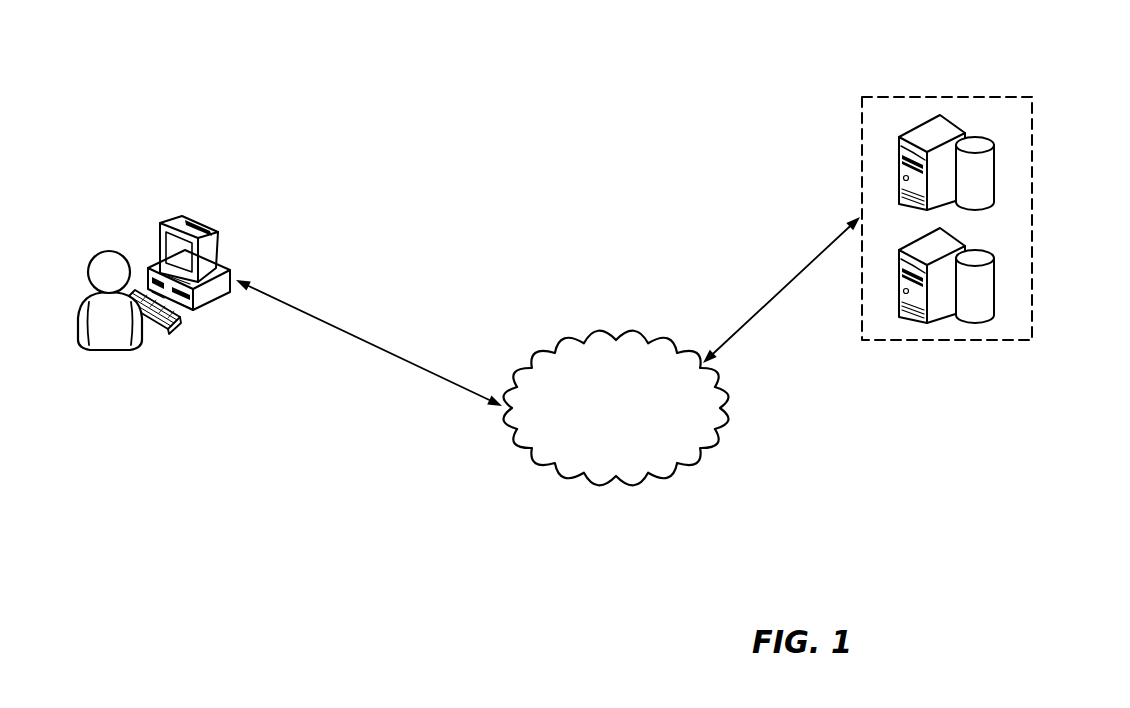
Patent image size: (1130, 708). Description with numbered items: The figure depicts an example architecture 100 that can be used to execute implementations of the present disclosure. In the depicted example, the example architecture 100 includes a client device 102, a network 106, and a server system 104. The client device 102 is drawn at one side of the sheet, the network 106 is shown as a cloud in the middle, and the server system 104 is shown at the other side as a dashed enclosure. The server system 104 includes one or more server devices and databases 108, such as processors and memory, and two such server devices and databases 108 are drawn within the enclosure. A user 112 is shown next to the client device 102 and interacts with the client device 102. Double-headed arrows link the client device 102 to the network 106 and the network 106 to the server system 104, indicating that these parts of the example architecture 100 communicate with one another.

The example architecture 100 is at (469, 98).
The client device 102 is at (158, 229).
The server system 104 is at (1032, 221).
The network 106 is at (614, 334).
The server devices and databases 108 is at (899, 163).
The user 112 is at (107, 350).